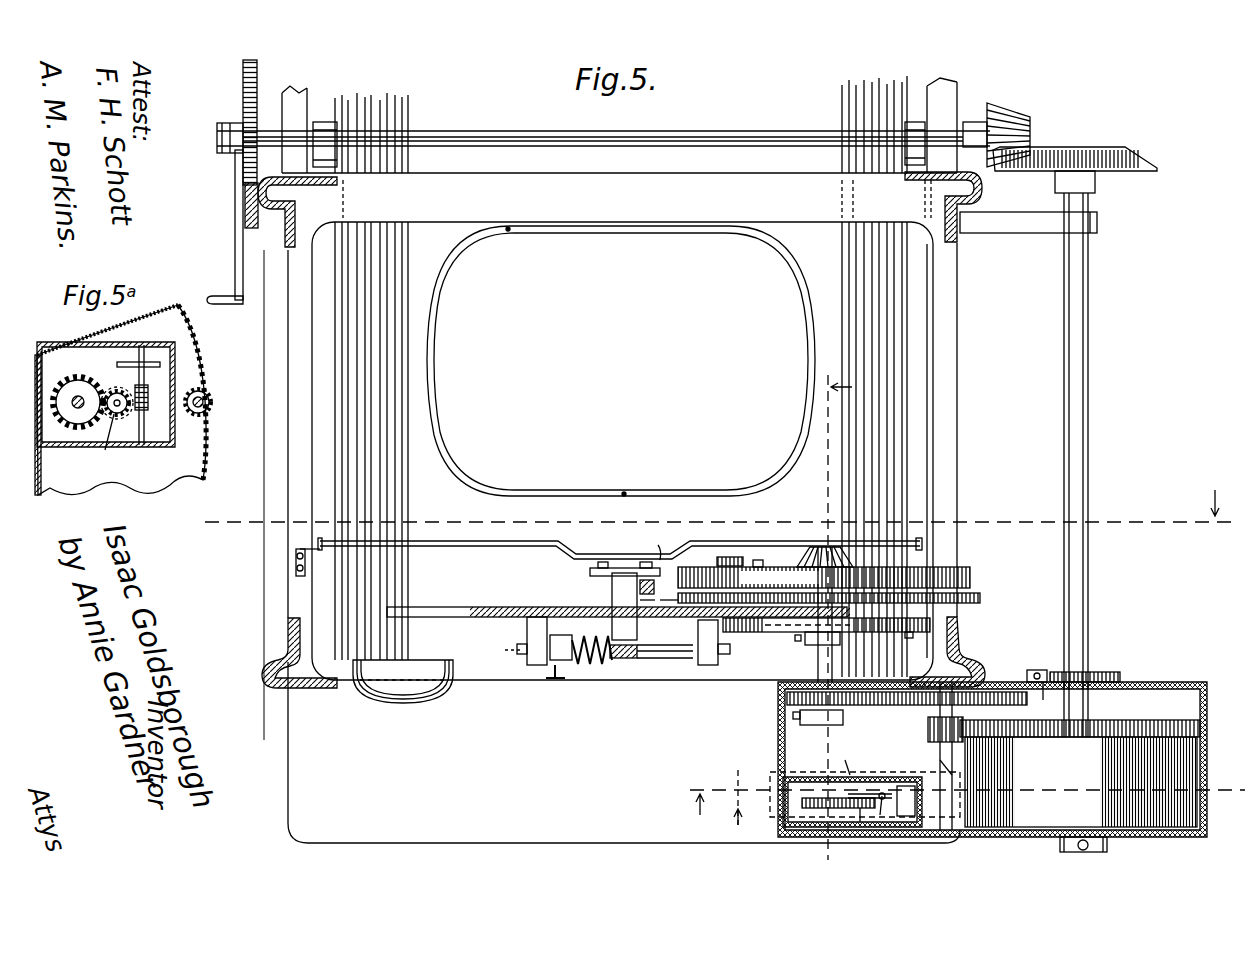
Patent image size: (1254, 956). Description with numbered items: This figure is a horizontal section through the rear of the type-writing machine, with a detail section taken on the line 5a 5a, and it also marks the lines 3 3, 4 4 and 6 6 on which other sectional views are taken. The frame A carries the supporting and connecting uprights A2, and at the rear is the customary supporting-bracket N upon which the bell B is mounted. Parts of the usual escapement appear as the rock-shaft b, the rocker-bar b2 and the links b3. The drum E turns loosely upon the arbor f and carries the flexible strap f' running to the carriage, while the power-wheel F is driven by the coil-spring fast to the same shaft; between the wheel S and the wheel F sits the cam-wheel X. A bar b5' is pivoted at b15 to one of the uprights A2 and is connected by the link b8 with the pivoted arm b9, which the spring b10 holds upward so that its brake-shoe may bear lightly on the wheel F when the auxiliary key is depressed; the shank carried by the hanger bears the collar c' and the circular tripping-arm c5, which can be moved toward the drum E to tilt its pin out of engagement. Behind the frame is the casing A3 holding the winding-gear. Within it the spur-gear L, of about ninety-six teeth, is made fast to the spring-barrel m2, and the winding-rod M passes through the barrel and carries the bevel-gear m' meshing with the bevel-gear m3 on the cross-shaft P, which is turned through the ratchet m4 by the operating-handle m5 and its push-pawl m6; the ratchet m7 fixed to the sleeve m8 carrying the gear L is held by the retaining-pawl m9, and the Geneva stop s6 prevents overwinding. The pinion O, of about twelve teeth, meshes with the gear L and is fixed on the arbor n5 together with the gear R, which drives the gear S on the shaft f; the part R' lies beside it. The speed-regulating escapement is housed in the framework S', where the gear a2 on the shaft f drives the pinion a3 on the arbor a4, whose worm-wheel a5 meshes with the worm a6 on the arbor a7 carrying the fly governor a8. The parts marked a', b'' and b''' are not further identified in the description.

In FIG. 5, the frame A is at (612, 459).
In FIG. 5, the uprights A2 is at (296, 214).
In FIG. 5, the casing A3 is at (790, 744).
In FIG. 5, the bell B is at (385, 700).
In FIG. 5, the cross-shaft P is at (725, 130).
In FIG. 5, the winding-rod M is at (1089, 424).
In FIG. 5, the supporting-bracket N is at (512, 618).
In FIG. 5, the cam-wheel X is at (780, 628).
In FIG. 5, the drum E is at (968, 580).
In FIG. 5, the power-wheel F is at (975, 599).
In FIG. 5, the gear S is at (888, 708).
In FIG. 5A, the framework S' is at (131, 389).
In FIG. 5A, the gear R is at (136, 400).
In FIG. 5, the shaft R' is at (916, 756).
In FIG. 5, the pinion O is at (935, 728).
In FIG. 5A, the pinion O is at (207, 392).
In FIG. 5, the spur-gear L is at (1136, 717).
In FIG. 5, the bevel-gear m' is at (1075, 155).
In FIG. 5, the spring-barrel m2 is at (1081, 754).
In FIG. 5, the bevel-gear m3 is at (1022, 110).
In FIG. 5, the ratchet m4 is at (243, 95).
In FIG. 5, the operating-handle m5 is at (236, 265).
In FIG. 5, the push-pawl m6 is at (255, 228).
In FIG. 5, the ratchet m7 is at (1092, 665).
In FIG. 5, the sleeve m8 is at (1072, 724).
In FIG. 5, the retaining-pawl m9 is at (1040, 665).
In FIG. 5, the rock-shaft b is at (617, 661).
In FIG. 5, the rocker-bar b2 is at (574, 562).
In FIG. 5, the links b3 is at (330, 540).
In FIG. 5, the bar b5' is at (499, 578).
In FIG. 5, the link b8 is at (654, 542).
In FIG. 5, the pivoted arm b9 is at (660, 596).
In FIG. 5, the spring b10 is at (690, 596).
In FIG. 5, the pivot b15 is at (298, 549).
In FIG. 5, the link b'' is at (701, 524).
In FIG. 5, the support b''' is at (679, 601).
In FIG. 5, the collar c' is at (767, 537).
In FIG. 5, the tripping-arm c5 is at (730, 556).
In FIG. 5, the arbor f is at (846, 757).
In FIG. 5, the flexible strap f' is at (651, 588).
In FIG. 5, the arbor n5 is at (930, 765).
In FIG. 5, the pawl a' is at (889, 786).
In FIG. 5, the gear a2 is at (865, 799).
In FIG. 5A, the gear a2 is at (85, 380).
In FIG. 5, the pinion a3 is at (855, 836).
In FIG. 5A, the pinion a3 is at (119, 414).
In FIG. 5, the arbor a4 is at (860, 796).
In FIG. 5A, the arbor a4 is at (107, 440).
In FIG. 5, the worm-wheel a5 is at (838, 794).
In FIG. 5A, the worm-wheel a5 is at (115, 392).
In FIG. 5, the worm a6 is at (905, 798).
In FIG. 5A, the worm a6 is at (154, 391).
In FIG. 5A, the arbor a7 is at (153, 395).
In FIG. 5A, the fly governor a8 is at (142, 354).
In FIG. 5, the Geneva stop s6 is at (1095, 852).
In FIG. 5, the section line 3 is at (965, 795).
In FIG. 5, the section line 4 is at (721, 508).
In FIG. 5, the section line 5a is at (730, 797).
In FIG. 5, the section line 6 is at (836, 625).